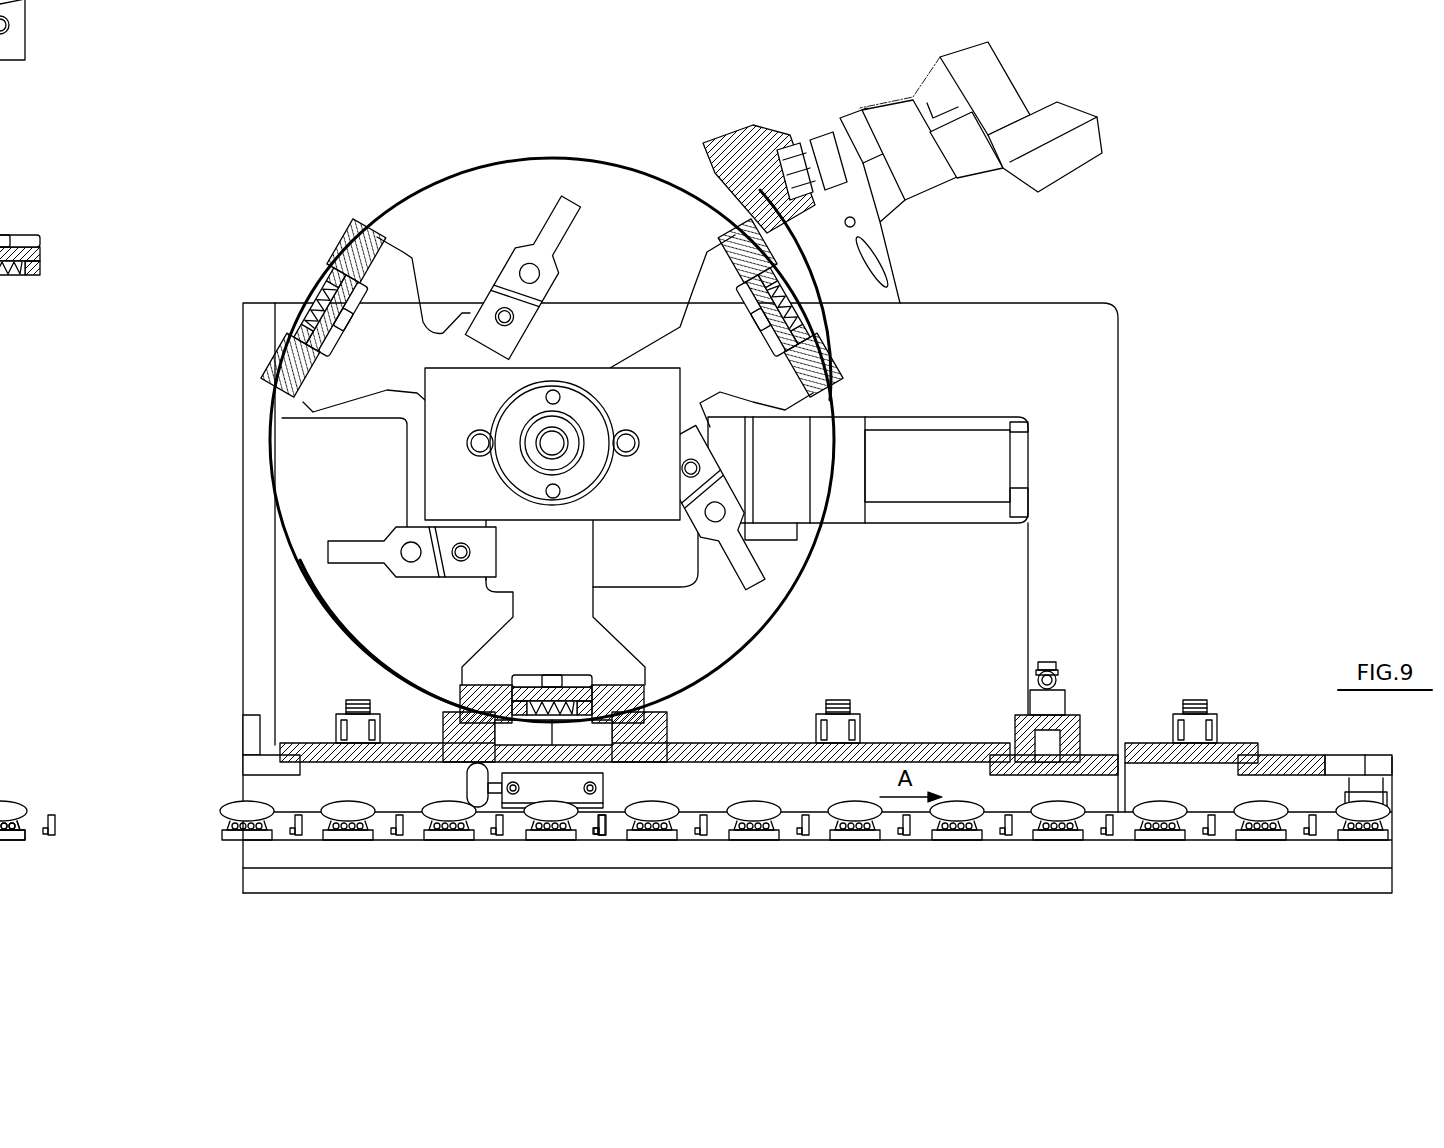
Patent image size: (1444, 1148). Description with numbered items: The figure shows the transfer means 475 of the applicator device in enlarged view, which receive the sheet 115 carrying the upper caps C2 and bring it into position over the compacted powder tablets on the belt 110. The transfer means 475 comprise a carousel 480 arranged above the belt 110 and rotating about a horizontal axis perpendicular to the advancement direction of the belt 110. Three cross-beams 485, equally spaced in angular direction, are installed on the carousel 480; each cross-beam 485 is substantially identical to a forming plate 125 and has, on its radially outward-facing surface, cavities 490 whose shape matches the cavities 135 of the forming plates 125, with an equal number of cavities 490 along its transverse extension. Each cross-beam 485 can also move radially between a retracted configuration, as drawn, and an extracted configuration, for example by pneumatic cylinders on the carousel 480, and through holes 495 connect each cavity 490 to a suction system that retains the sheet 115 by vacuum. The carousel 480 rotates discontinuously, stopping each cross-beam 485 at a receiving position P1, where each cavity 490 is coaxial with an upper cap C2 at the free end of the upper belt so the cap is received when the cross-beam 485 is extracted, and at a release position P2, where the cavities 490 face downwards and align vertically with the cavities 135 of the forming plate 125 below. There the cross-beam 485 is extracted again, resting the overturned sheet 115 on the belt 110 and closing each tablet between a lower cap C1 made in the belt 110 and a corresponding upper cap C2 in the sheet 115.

The belt 110 is at (310, 838).
The sheet 115 is at (900, 293).
The forming plate 125 is at (505, 832).
The cavity 135 is at (586, 832).
The transfer means 475 is at (285, 148).
The carousel 480 is at (423, 385).
The cross-beam 485 is at (293, 333).
The cavity 490 is at (315, 295).
The through hole 495 is at (330, 273).
The receiving position P1 is at (848, 385).
The release position P2 is at (436, 677).
The lower cap C1 is at (565, 836).
The upper cap C2 is at (873, 257).